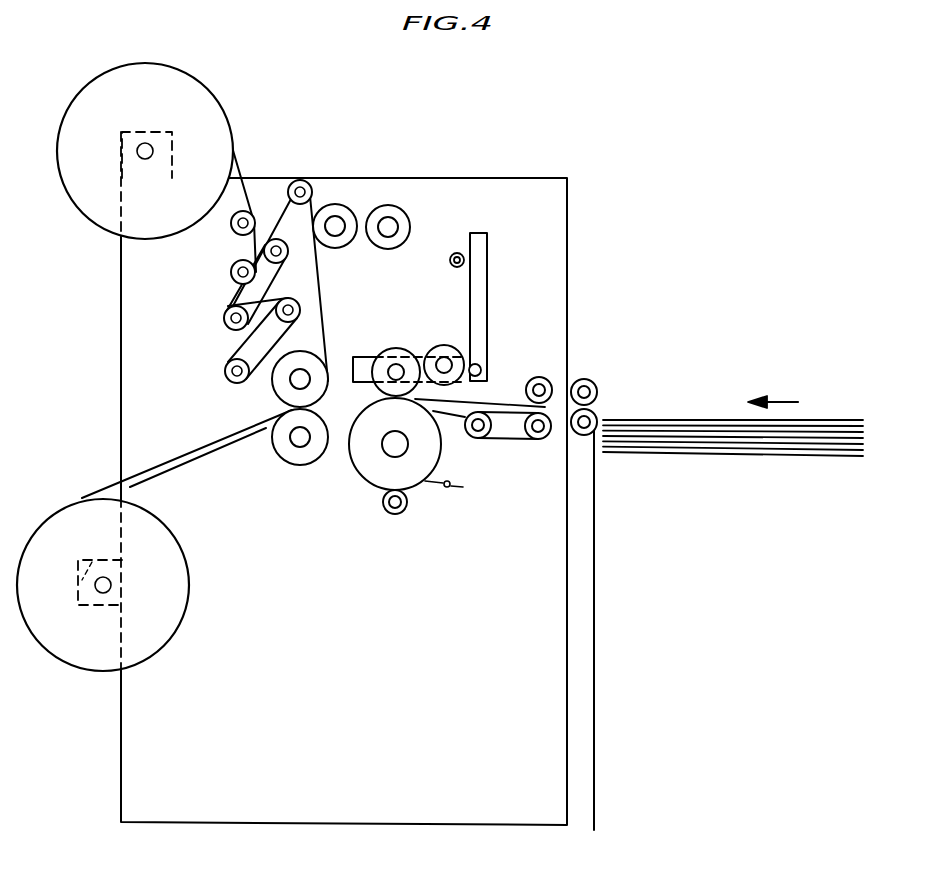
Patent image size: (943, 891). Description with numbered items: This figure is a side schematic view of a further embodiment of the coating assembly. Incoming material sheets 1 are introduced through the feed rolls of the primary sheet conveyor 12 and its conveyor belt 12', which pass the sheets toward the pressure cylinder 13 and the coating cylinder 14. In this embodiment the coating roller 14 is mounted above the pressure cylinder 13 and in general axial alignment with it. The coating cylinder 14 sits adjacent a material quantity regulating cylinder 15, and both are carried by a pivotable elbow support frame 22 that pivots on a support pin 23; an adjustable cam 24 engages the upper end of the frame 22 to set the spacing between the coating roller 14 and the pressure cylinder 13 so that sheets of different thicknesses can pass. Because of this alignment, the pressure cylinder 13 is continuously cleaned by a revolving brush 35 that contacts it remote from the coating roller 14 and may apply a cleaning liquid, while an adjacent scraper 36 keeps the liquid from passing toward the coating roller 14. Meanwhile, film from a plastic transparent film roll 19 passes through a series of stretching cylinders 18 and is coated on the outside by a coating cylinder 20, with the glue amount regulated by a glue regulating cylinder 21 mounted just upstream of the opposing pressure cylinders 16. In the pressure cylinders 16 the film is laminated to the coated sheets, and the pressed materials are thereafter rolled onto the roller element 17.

The material sheets 1 is at (505, 404).
The primary sheet conveyor 12 is at (579, 388).
The conveyor belt 12' is at (508, 457).
The pressure cylinder 13 is at (363, 473).
The coating cylinder 14 is at (387, 352).
The material quantity regulating cylinder 15 is at (443, 345).
The opposing pressure cylinders 16 is at (320, 409).
The roller element 17 is at (65, 513).
The stretching cylinders 18 is at (323, 155).
The plastic transparent film roll 19 is at (217, 108).
The coating cylinder 20 is at (378, 168).
The glue regulating cylinder 21 is at (397, 206).
The pivotable elbow support frame 22 is at (530, 213).
The support pin 23 is at (479, 364).
The adjustable cam 24 is at (457, 253).
The revolving brush 35 is at (390, 508).
The scraper 36 is at (447, 488).